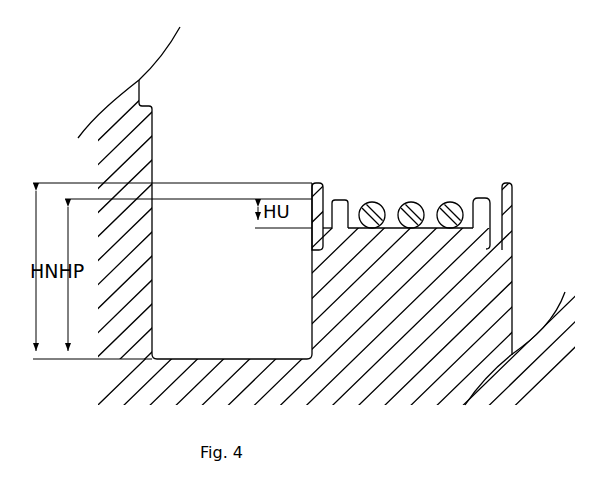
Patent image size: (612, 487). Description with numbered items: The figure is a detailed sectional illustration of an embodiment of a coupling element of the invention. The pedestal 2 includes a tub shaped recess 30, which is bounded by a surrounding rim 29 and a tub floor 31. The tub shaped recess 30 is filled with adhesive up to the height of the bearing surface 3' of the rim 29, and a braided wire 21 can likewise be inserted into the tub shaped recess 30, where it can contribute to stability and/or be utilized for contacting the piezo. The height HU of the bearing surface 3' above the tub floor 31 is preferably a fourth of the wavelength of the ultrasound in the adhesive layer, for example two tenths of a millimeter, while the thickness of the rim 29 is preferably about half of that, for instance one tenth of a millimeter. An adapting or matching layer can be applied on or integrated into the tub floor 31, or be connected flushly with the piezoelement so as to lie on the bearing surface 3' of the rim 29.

The pedestal 2 is at (350, 327).
The bearing surface 3' is at (318, 176).
The braided wire 21 is at (372, 200).
The rim 29 is at (483, 205).
The tub shaped recess 30 is at (356, 218).
The tub floor 31 is at (463, 232).